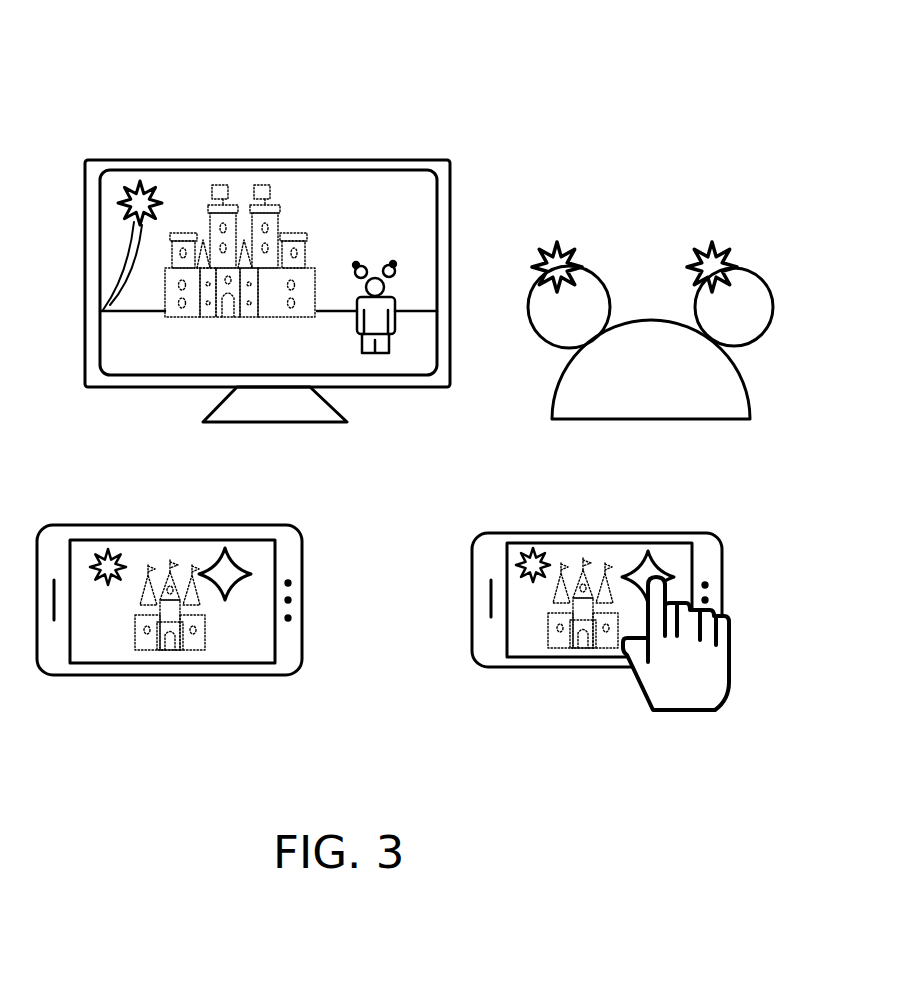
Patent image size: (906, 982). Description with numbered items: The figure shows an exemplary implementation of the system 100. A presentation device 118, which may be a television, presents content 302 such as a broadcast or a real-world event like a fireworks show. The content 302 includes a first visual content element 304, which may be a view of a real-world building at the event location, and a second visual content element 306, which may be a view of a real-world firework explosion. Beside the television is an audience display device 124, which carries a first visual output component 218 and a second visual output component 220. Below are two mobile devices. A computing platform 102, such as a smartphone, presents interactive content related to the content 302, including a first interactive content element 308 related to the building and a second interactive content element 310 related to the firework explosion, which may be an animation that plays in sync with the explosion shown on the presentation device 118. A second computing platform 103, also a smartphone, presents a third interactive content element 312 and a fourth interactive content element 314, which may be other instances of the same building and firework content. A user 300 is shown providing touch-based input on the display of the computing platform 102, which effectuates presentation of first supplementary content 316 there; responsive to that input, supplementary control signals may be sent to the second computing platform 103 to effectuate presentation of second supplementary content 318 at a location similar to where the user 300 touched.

The system 100 is at (420, 80).
The presentation device 118 is at (450, 172).
The content 302 is at (268, 237).
The first visual content element 304 is at (224, 205).
The second visual content element 306 is at (139, 181).
The audience display device 124 is at (737, 372).
The first visual output component 218 is at (557, 250).
The second visual output component 220 is at (712, 250).
The second computing platform 103 is at (303, 532).
The fourth interactive content element 314 is at (108, 549).
The second supplementary content 318 is at (225, 548).
The third interactive content element 312 is at (143, 625).
The computing platform 102 is at (720, 536).
The second interactive content element 310 is at (533, 548).
The first supplementary content 316 is at (648, 551).
The first interactive content element 308 is at (560, 623).
The user 300 is at (670, 702).